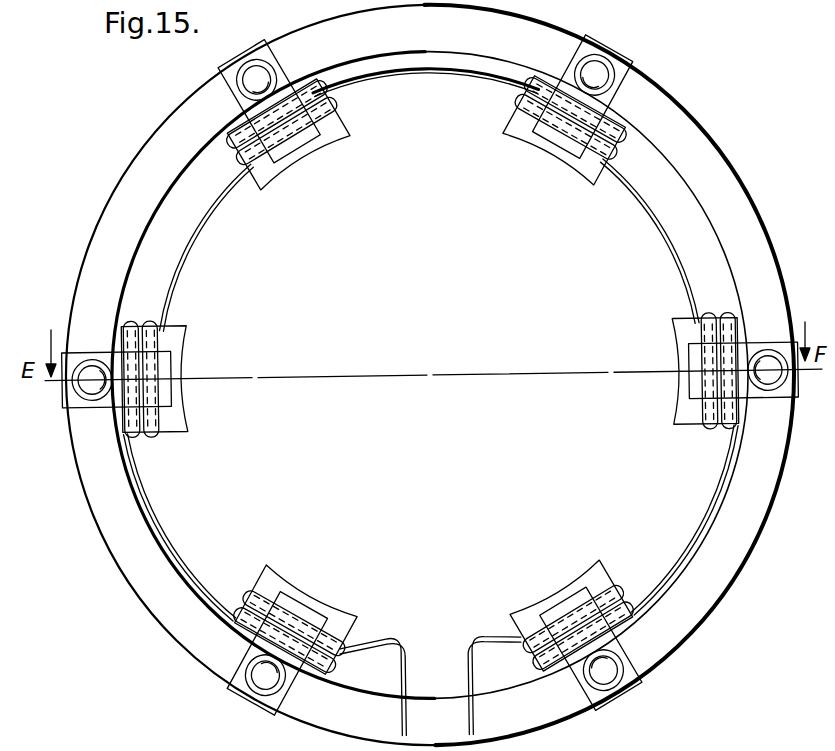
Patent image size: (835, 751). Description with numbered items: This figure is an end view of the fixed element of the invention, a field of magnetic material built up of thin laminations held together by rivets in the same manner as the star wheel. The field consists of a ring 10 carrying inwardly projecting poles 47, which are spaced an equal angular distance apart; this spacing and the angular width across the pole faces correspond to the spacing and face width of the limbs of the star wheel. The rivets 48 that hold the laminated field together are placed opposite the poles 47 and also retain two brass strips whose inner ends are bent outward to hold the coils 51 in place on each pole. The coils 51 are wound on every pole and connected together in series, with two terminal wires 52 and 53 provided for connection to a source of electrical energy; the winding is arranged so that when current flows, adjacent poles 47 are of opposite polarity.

The ring 10 is at (722, 176).
The inwardly projecting poles 47 is at (268, 173).
The rivets 48 is at (612, 63).
The coils 51 is at (152, 437).
The terminal wire 52 is at (398, 712).
The terminal wire 53 is at (470, 713).